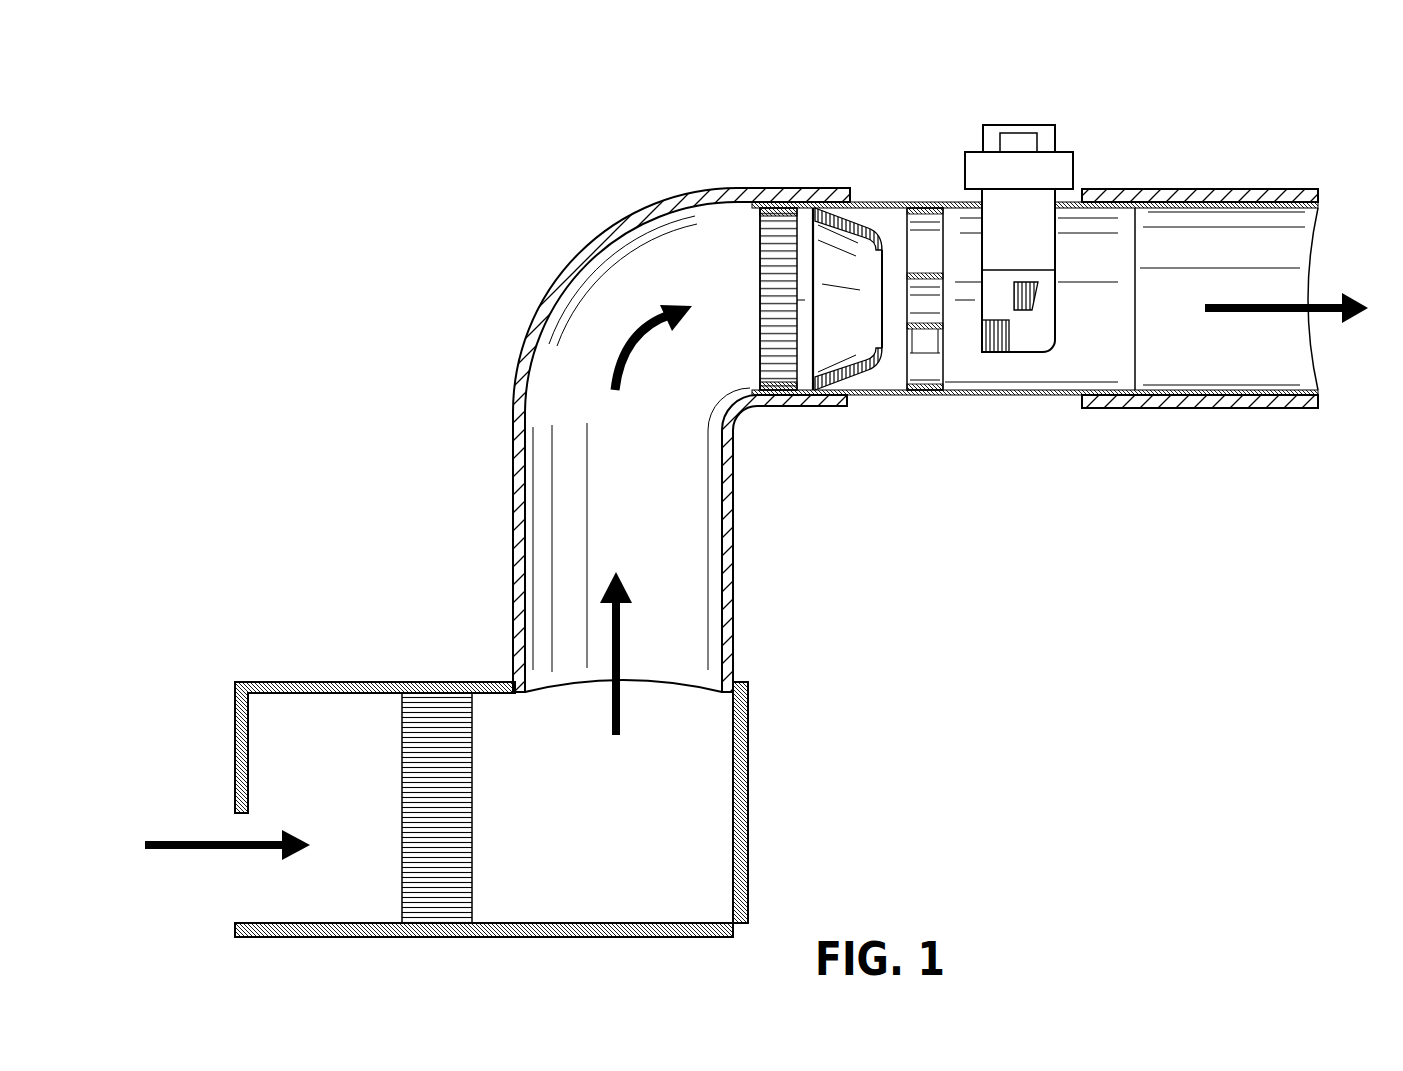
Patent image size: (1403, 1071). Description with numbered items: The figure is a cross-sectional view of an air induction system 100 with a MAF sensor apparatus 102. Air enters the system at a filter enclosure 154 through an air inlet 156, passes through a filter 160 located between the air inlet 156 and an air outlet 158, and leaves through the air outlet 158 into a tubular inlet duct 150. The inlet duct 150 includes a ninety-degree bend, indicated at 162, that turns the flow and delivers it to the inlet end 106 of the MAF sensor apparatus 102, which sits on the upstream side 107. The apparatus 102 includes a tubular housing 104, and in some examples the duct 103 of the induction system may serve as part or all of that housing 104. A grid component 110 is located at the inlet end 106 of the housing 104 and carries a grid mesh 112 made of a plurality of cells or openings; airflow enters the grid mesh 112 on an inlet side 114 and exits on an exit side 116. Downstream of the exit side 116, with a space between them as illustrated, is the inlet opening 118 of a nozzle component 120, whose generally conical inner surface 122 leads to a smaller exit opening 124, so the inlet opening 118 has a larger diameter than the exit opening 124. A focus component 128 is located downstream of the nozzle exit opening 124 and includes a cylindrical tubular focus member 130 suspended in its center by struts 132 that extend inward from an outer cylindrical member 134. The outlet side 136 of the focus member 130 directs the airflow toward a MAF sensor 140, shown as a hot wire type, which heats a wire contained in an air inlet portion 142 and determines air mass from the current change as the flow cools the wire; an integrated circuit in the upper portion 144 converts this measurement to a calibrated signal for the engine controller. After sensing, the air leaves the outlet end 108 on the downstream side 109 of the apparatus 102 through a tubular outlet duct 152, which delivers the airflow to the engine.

The air induction system 100 is at (167, 82).
The MAF sensor apparatus 102 is at (1035, 287).
The duct 103 is at (598, 232).
The tubular housing 104 is at (880, 396).
The inlet end 106 is at (730, 235).
The upstream side 107 is at (650, 255).
The outlet end 108 is at (1152, 235).
The downstream side 109 is at (1236, 235).
The grid component 110 is at (763, 215).
The grid mesh 112 is at (760, 285).
The inlet side 114 is at (740, 342).
The exit side 116 is at (881, 300).
The inlet opening 118 is at (810, 348).
The nozzle component 120 is at (868, 375).
The conical inner surface 122 is at (840, 298).
The exit opening 124 is at (880, 288).
The focus component 128 is at (942, 205).
The focus member 130 is at (930, 360).
The struts 132 is at (928, 396).
The outer cylindrical member 134 is at (932, 396).
The outlet side 136 is at (950, 313).
The MAF sensor 140 is at (1050, 261).
The air inlet portion 142 is at (1017, 353).
The upper portion 144 is at (1073, 152).
The inlet duct 150 is at (513, 487).
The outlet duct 152 is at (1305, 190).
The filter enclosure 154 is at (235, 682).
The air inlet 156 is at (222, 900).
The air outlet 158 is at (563, 697).
The filter 160 is at (402, 818).
The 90-degree bend 162 is at (602, 318).